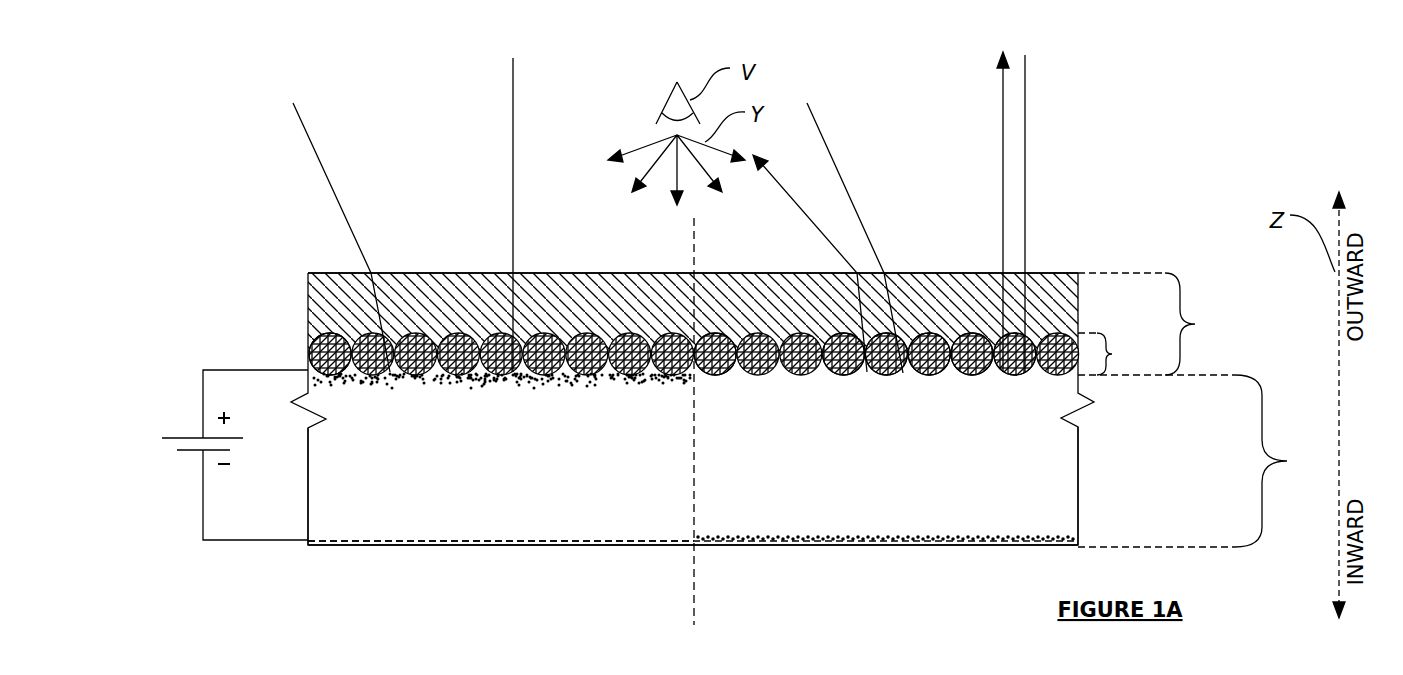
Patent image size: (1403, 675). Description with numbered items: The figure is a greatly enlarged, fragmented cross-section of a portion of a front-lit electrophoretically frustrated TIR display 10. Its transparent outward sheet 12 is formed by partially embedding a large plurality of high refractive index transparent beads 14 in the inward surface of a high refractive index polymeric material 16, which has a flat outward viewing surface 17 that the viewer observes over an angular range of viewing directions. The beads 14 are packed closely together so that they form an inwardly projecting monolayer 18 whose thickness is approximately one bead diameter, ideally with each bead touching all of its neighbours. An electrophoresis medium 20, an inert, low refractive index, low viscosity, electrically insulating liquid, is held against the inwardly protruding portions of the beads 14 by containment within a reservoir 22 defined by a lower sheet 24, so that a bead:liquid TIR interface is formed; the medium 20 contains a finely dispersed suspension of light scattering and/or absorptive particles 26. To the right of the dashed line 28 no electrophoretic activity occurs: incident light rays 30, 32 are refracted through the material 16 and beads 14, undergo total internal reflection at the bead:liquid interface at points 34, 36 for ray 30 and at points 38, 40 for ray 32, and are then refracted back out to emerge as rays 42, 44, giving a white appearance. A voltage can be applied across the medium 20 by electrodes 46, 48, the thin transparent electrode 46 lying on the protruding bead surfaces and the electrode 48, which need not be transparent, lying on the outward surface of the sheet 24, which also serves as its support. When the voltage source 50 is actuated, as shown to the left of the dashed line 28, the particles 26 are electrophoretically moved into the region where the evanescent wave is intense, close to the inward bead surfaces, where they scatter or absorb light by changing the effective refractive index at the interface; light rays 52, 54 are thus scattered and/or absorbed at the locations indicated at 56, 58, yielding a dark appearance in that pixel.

The electrophoretically frustrated TIR display 10 is at (1082, 246).
The transparent outward sheet 12 is at (1156, 324).
The transparent beads 14 is at (583, 348).
The polymeric material 16 is at (637, 290).
The outward viewing surface 17 is at (470, 272).
The monolayer 18 is at (1109, 354).
The electrophoresis medium 20 is at (693, 486).
The reservoir 22 is at (1198, 461).
The lower sheet 24 is at (445, 546).
The particles 26 is at (410, 380).
The dashed line 28 is at (693, 583).
The incident light ray 30 is at (1025, 88).
The incident light ray 32 is at (827, 140).
The TIR point 34 is at (1033, 375).
The TIR point 36 is at (992, 375).
The TIR point 38 is at (910, 375).
The TIR point 40 is at (867, 375).
The emerging ray 42 is at (1003, 182).
The emerging ray 44 is at (790, 200).
The electrode 46 is at (327, 358).
The electrode 48 is at (415, 540).
The voltage source 50 is at (178, 437).
The light ray 52 is at (513, 113).
The light ray 54 is at (315, 152).
The scattering/absorption point 56 is at (497, 385).
The scattering/absorption point 58 is at (365, 378).